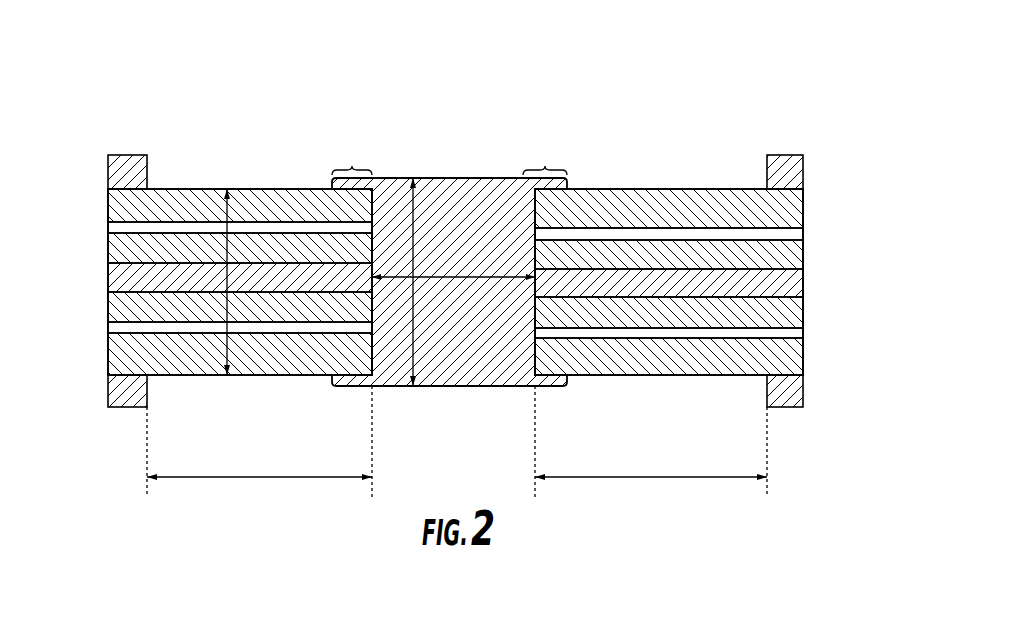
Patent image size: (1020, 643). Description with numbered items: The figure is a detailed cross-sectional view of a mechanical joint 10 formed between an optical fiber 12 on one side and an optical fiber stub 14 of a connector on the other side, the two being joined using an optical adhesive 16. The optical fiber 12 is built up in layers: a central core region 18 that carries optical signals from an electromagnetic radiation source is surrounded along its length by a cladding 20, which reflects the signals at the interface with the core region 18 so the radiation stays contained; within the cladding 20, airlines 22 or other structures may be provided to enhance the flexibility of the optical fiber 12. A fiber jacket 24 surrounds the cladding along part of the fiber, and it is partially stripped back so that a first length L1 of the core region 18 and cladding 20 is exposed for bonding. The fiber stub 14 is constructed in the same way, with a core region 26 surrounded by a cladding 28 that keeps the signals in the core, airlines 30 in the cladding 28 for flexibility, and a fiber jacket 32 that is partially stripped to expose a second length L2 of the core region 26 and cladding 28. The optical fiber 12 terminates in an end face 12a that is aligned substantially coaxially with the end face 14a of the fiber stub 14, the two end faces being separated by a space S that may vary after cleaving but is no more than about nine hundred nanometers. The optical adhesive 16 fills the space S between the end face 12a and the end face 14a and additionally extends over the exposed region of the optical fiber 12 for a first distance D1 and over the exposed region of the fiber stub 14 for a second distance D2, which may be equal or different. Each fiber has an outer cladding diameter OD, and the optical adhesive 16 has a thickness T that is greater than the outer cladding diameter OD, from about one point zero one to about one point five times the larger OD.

The mechanical joint 10 is at (350, 108).
The optical fiber 12 is at (668, 189).
The end face of optical fiber 12a is at (532, 350).
The optical fiber stub 14 is at (253, 188).
The end face of fiber stub 14a is at (373, 340).
The optical adhesive 16 is at (465, 212).
The core region 18 is at (613, 283).
The cladding 20 is at (793, 214).
The airlines 22 is at (734, 233).
The fiber jacket 24 is at (785, 168).
The core region 26 is at (310, 278).
The cladding 28 is at (122, 207).
The airlines 30 is at (178, 227).
The fiber jacket 32 is at (123, 160).
The space S is at (443, 275).
The thickness of optical adhesive T is at (415, 340).
The outer cladding diameter OD is at (228, 345).
The first distance D1 is at (545, 154).
The second distance D2 is at (352, 154).
The first length L1 is at (694, 478).
The second length L2 is at (222, 480).